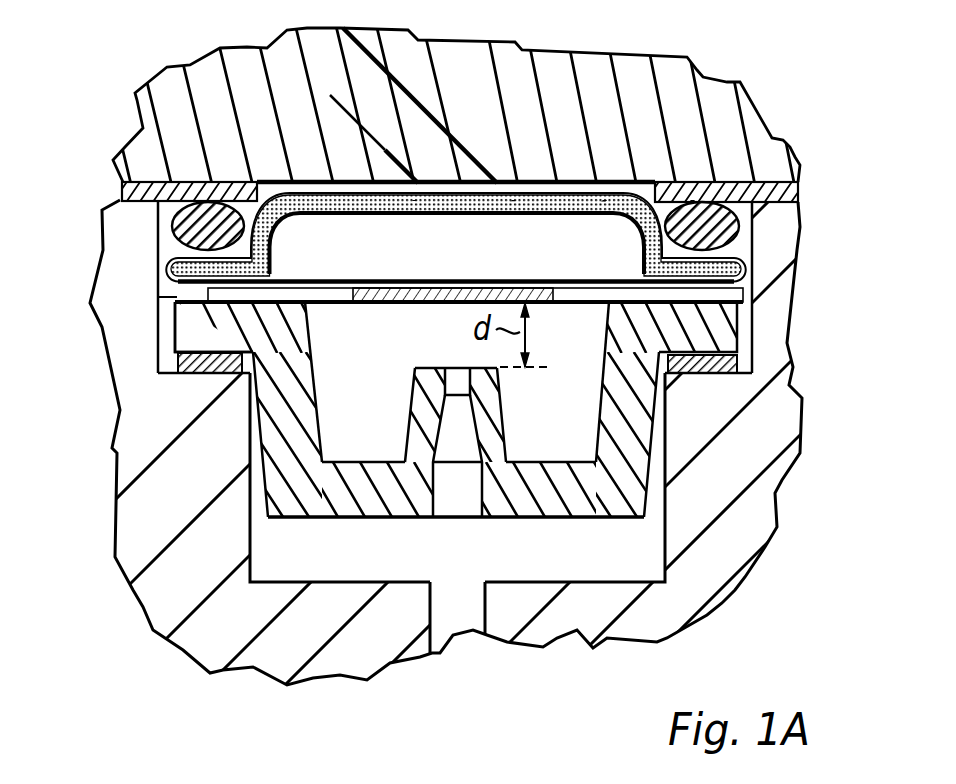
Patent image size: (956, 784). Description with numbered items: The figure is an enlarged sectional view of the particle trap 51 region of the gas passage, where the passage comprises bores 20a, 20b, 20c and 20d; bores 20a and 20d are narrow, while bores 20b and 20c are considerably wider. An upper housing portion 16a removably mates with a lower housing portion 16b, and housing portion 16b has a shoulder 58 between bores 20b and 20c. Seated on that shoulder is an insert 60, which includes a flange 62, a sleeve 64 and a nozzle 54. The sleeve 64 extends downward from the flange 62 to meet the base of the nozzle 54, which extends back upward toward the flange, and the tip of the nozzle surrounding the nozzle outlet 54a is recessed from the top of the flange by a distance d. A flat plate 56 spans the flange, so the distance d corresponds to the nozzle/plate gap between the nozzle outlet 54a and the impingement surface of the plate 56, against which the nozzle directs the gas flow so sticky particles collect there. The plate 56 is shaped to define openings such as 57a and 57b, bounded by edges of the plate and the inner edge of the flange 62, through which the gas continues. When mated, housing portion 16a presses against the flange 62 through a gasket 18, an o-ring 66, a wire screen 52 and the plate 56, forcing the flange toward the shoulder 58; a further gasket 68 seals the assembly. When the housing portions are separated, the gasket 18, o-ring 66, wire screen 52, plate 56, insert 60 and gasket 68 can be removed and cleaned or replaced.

The housing portion 16a is at (190, 100).
The housing portion 16b is at (182, 503).
The gasket 18 is at (798, 182).
The bore 20a is at (485, 627).
The bore 20b is at (563, 543).
The bore 20c is at (177, 295).
The bore 20d is at (380, 103).
The particle trap 51 is at (300, 545).
The wire screen 52 is at (732, 250).
The nozzle 54 is at (490, 412).
The nozzle outlet 54a is at (452, 377).
The plate 56 is at (693, 297).
The opening 57a is at (587, 309).
The opening 57b is at (321, 313).
The shoulder 58 is at (176, 349).
The insert 60 is at (200, 323).
The flange 62 is at (695, 323).
The sleeve 64 is at (633, 417).
The o-ring 66 is at (177, 223).
The gasket 68 is at (157, 356).